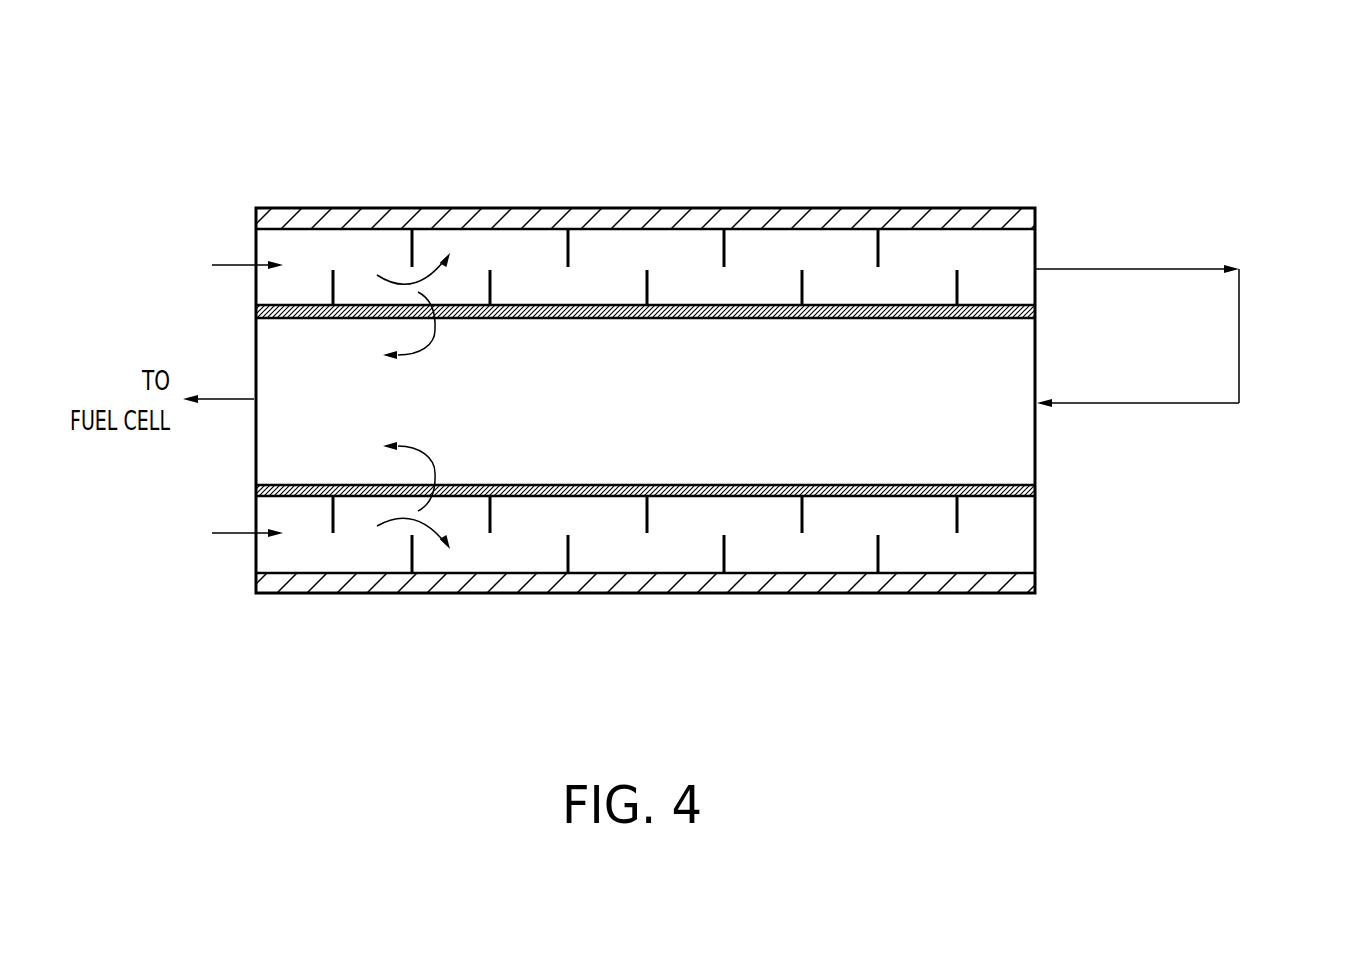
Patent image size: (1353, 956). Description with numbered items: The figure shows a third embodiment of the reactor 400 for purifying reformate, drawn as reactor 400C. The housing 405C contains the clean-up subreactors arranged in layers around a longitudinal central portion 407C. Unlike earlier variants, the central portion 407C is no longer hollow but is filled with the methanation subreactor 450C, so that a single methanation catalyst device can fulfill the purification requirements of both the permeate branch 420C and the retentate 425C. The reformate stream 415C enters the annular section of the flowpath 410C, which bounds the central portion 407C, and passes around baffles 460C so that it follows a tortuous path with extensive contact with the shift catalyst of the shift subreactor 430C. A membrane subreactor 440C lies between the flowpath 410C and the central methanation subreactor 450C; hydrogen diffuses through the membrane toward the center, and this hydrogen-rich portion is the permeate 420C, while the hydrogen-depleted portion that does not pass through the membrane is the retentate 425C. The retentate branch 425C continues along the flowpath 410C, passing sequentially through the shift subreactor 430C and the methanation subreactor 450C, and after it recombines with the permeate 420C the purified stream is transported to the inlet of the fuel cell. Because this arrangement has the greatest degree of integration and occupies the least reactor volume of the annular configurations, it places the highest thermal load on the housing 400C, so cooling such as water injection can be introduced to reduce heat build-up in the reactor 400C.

The reactor 400 is at (735, 23).
The reactor 400C is at (648, 297).
The outer end plate / shell 405C is at (1008, 208).
The longitudinal central portion 407C is at (973, 425).
The flowpath 410C is at (220, 263).
The permeate hydrogen flow path 415C is at (420, 290).
The permeate branch 420C is at (418, 355).
The retentate branch 425C is at (1239, 341).
The shift subreactor 430C is at (318, 228).
The hydrogen-selective membrane 440C is at (547, 304).
The methanation subreactor 450C is at (787, 400).
The flow-directing baffles 460C is at (412, 243).